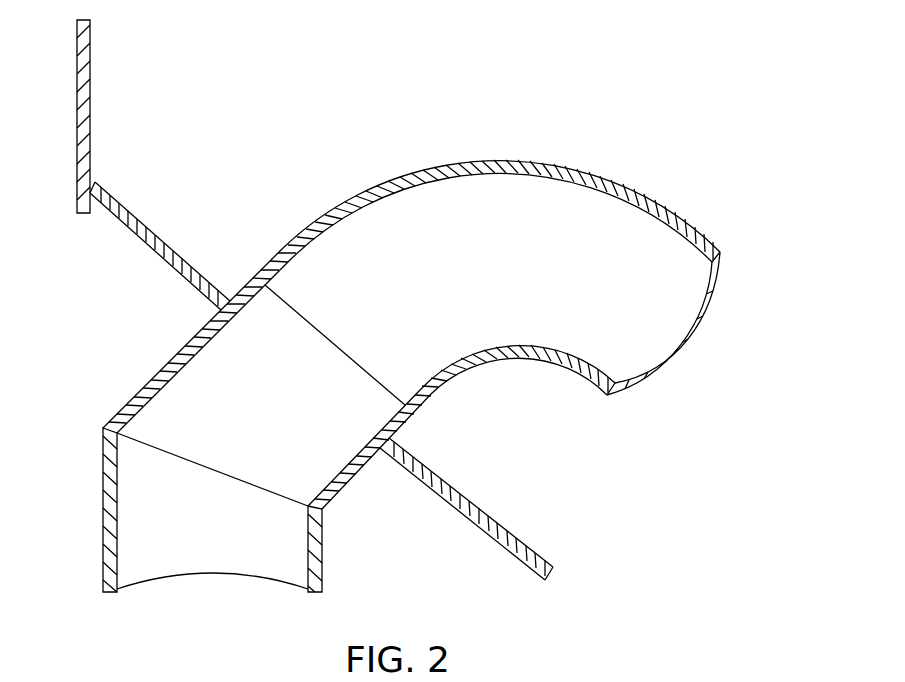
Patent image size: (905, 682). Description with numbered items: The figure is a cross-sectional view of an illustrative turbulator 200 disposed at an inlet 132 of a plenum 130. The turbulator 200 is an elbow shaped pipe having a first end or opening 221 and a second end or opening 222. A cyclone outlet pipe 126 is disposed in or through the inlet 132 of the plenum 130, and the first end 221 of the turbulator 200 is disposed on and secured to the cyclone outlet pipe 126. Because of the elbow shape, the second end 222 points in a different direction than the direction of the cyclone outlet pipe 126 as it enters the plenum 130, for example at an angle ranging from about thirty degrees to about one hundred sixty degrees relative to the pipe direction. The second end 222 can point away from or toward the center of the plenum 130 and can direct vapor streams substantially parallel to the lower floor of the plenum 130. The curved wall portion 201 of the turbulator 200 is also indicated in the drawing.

The turbulator 200 is at (623, 162).
The outer wall top portion 201 is at (482, 161).
The first end 221 is at (342, 253).
The second end 222 is at (690, 342).
The cyclone outlet pipe 126 is at (162, 369).
The plenum 130 is at (90, 81).
The inlet 132 is at (385, 448).